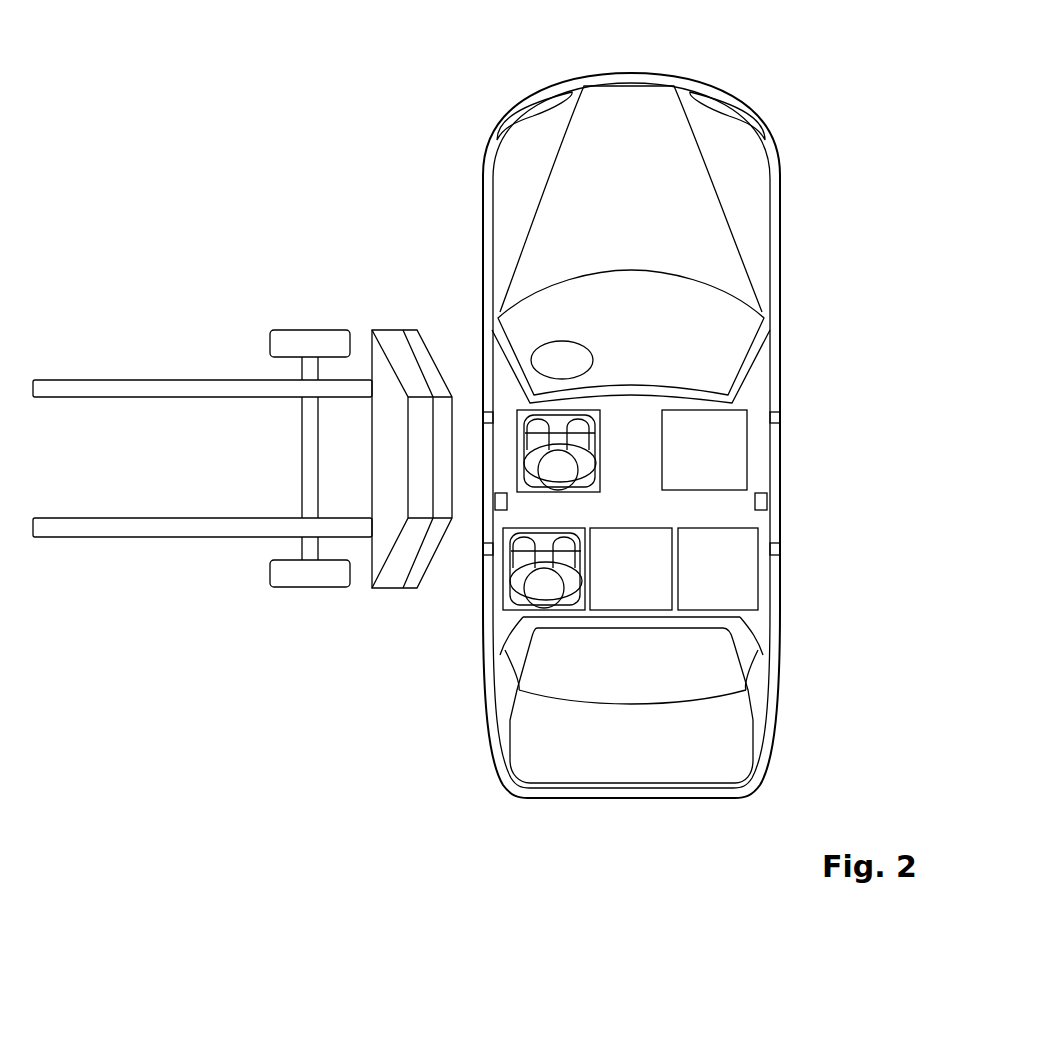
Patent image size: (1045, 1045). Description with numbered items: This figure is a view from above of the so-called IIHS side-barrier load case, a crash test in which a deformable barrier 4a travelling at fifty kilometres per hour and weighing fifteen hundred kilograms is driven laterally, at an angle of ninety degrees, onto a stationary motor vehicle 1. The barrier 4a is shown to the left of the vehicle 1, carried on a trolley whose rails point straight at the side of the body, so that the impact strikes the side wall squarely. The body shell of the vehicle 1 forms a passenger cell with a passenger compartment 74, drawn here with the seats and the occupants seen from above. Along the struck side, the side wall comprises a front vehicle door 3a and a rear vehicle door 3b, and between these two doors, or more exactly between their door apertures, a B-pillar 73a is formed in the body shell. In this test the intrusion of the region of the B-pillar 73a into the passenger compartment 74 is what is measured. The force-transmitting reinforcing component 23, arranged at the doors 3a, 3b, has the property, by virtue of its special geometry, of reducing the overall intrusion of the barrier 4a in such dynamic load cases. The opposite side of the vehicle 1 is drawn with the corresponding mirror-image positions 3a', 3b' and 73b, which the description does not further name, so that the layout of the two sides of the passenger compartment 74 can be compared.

The motor vehicle 1 is at (697, 78).
The front vehicle door 3a is at (421, 353).
The rear vehicle door 3b is at (420, 615).
The acceleration sensor (front right side) 3a' is at (834, 427).
The acceleration sensor (rear right side) 3b' is at (835, 558).
The force-transmitting reinforcing component 23 is at (624, 485).
The deformable barrier 4a is at (392, 574).
The B-pillar 73a is at (495, 501).
The pressure sensor (right) 73b is at (767, 500).
The passenger compartment 74 is at (643, 505).